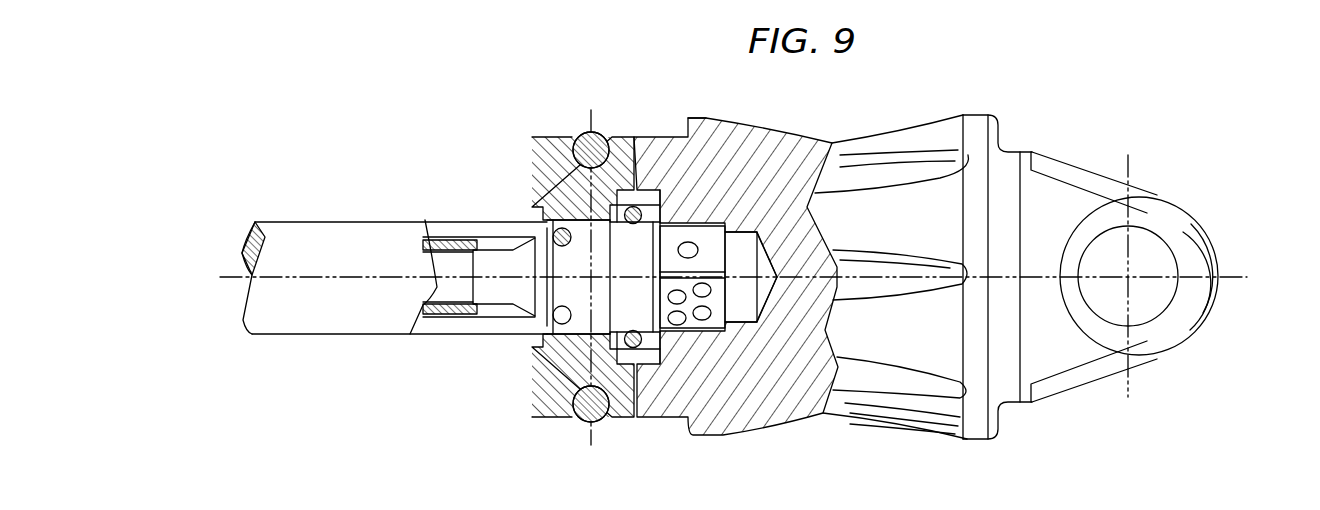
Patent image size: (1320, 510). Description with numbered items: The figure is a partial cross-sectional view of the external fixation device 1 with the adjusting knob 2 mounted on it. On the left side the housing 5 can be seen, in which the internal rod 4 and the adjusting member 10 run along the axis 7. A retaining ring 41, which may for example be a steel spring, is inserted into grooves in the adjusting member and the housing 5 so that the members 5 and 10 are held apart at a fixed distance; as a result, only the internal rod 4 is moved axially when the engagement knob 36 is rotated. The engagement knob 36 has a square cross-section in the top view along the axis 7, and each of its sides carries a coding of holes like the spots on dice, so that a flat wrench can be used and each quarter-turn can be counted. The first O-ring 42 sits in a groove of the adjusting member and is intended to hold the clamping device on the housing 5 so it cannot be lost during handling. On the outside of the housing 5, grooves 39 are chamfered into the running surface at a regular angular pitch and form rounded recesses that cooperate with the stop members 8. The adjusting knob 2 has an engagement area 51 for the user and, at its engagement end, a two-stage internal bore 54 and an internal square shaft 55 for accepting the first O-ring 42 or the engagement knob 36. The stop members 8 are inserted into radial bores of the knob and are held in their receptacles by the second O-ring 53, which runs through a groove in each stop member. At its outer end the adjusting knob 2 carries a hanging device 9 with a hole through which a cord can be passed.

The external fixation device 1 is at (455, 390).
The adjusting knob 2 is at (858, 146).
The internal rod 4 is at (443, 240).
The housing 5 is at (356, 224).
The axis 7 is at (236, 278).
The stop member 8 is at (635, 137).
The hanging device 9 is at (1057, 167).
The adjusting member 10 is at (478, 322).
The engagement knob 36 is at (718, 323).
The groove 39 is at (532, 388).
The retaining ring 41 is at (553, 235).
The first O-ring 42 is at (641, 342).
The engagement area 51 is at (873, 418).
The second O-ring 53 is at (577, 132).
The internal bore 54 is at (693, 127).
The internal square shaft 55 is at (712, 222).